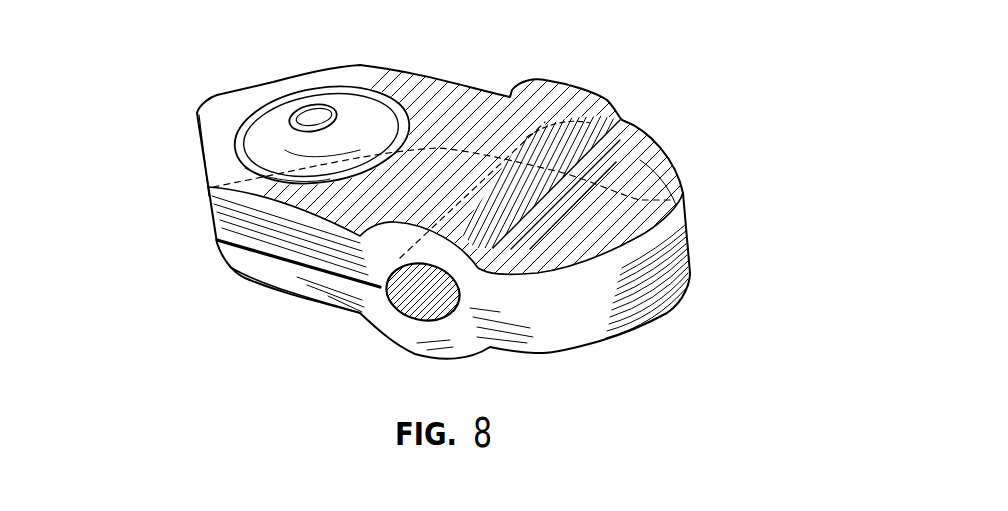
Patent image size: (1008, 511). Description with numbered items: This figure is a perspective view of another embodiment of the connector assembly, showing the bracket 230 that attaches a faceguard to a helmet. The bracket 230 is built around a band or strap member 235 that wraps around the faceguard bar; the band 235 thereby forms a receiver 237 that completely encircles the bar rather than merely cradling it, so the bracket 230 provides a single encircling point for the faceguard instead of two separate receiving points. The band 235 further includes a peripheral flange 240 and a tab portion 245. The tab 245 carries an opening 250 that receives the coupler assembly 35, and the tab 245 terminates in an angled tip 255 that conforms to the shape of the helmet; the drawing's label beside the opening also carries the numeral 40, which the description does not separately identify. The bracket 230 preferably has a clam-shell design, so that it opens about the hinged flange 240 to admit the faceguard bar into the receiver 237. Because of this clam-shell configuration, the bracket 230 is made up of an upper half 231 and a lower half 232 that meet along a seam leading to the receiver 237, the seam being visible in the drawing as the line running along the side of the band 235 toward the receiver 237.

The bracket 230 is at (707, 110).
The upper half 231 is at (207, 223).
The lower half 232 is at (250, 273).
The band or strap member 235 is at (560, 102).
The receiver 237 is at (403, 310).
The peripheral flange 240 is at (668, 190).
The tab portion 245 is at (170, 192).
The opening 250 is at (398, 108).
The angled tip 255 is at (198, 113).
The coupler assembly 35 is at (318, 76).
The passage 40 is at (270, 133).